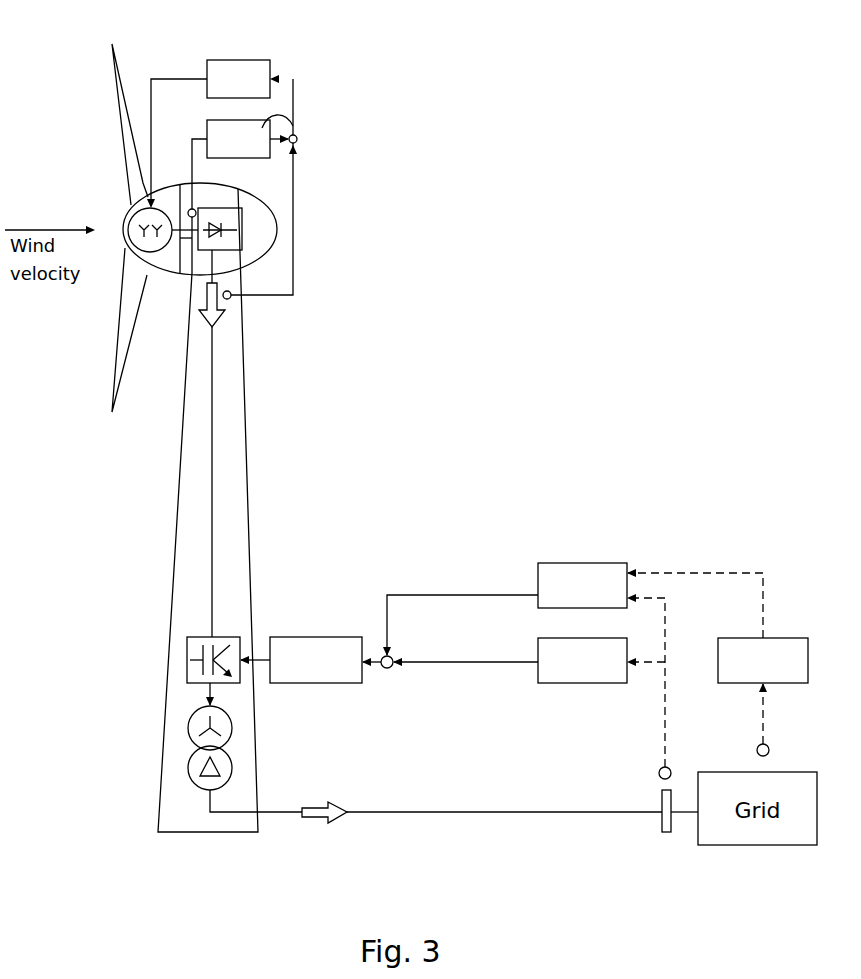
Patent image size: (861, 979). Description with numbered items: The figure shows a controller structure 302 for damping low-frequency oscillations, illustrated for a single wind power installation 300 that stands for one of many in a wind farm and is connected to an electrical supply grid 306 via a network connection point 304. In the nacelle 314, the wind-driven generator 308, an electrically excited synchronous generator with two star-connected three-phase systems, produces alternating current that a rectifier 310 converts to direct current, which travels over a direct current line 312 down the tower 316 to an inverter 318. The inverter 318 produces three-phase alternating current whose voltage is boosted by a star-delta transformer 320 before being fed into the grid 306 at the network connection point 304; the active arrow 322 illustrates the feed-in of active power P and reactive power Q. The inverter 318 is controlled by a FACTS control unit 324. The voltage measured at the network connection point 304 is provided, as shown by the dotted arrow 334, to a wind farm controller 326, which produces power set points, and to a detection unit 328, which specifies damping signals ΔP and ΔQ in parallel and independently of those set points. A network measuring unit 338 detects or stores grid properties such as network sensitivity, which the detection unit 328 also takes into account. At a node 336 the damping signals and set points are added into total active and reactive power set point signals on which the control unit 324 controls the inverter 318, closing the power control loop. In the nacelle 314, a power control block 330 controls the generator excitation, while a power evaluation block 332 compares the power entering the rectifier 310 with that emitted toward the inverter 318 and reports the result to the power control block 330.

The wind power installation 300 is at (378, 287).
The controller structure 302 is at (529, 428).
The network connection point 304 is at (658, 834).
The electrical supply grid 306 is at (690, 813).
The generator 308 is at (128, 207).
The rectifier 310 is at (243, 220).
The direct current line 312 is at (213, 425).
The nacelle 314 is at (178, 280).
The tower 316 is at (179, 466).
The inverter 318 is at (187, 655).
The transformer 320 is at (190, 760).
The active arrow 322 is at (318, 819).
The control unit 324 is at (343, 637).
The wind farm controller 326 is at (549, 684).
The detection unit 328 is at (615, 563).
The power control block 330 is at (255, 60).
The power evaluation block 332 is at (296, 129).
The dotted arrow 334 is at (665, 710).
The node 336 is at (390, 668).
The network measuring unit 338 is at (774, 638).